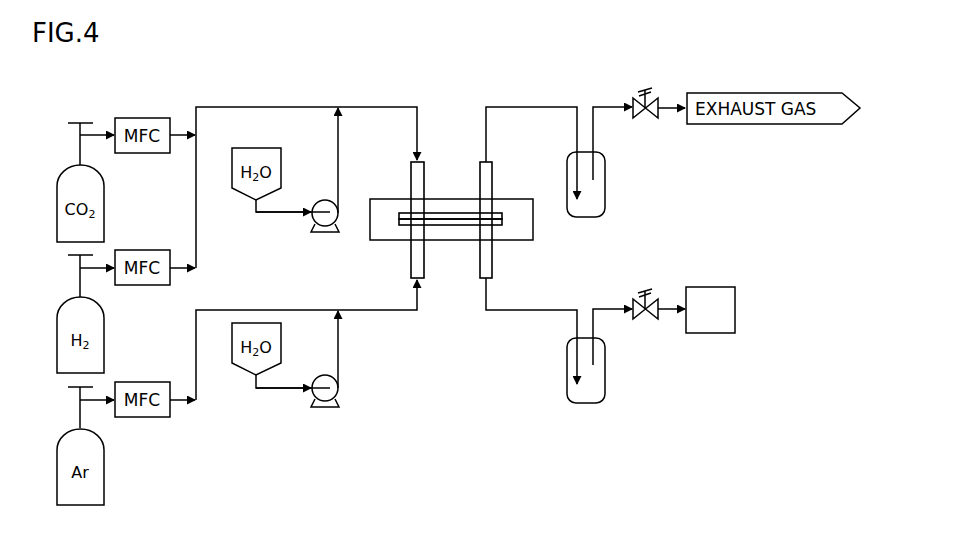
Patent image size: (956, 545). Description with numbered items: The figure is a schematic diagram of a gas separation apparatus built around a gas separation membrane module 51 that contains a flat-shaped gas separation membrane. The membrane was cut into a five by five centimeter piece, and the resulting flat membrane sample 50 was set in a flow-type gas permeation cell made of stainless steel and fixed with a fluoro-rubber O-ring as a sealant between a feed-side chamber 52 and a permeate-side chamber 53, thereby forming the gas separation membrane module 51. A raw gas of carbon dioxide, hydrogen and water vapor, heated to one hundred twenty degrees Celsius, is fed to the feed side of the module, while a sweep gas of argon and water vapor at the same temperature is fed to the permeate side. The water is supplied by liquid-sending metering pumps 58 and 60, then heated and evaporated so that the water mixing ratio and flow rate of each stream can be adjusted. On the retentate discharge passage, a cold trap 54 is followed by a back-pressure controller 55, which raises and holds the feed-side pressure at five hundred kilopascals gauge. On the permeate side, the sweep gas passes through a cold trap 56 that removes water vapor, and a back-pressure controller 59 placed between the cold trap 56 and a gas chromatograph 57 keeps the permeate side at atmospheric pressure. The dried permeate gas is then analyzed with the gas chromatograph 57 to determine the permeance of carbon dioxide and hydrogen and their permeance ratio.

The flat membrane sample 50 is at (404, 205).
The gas separation membrane module 51 is at (503, 191).
The feed-side chamber 52 is at (451, 211).
The permeate-side chamber 53 is at (452, 228).
The cold trap 54 is at (613, 190).
The back-pressure controller 55 is at (630, 87).
The cold trap 56 is at (613, 377).
The gas chromatograph 57 is at (712, 285).
The liquid-sending metering pump 58 is at (318, 199).
The back-pressure controller 59 is at (630, 289).
The liquid-sending metering pump 60 is at (318, 373).